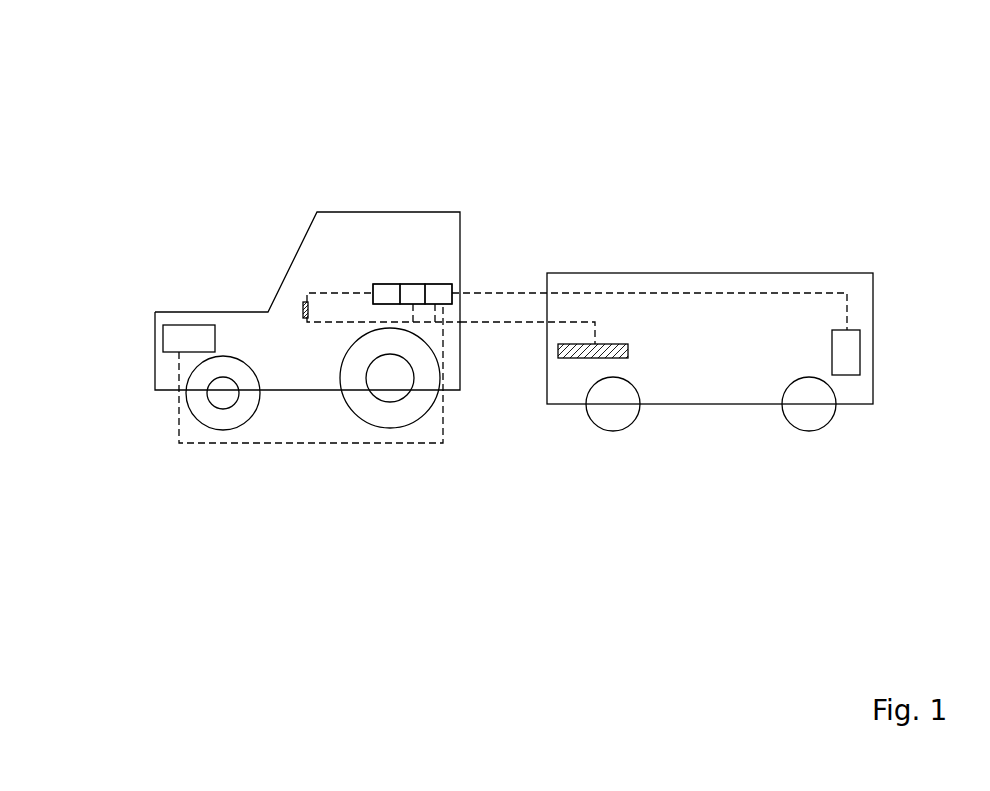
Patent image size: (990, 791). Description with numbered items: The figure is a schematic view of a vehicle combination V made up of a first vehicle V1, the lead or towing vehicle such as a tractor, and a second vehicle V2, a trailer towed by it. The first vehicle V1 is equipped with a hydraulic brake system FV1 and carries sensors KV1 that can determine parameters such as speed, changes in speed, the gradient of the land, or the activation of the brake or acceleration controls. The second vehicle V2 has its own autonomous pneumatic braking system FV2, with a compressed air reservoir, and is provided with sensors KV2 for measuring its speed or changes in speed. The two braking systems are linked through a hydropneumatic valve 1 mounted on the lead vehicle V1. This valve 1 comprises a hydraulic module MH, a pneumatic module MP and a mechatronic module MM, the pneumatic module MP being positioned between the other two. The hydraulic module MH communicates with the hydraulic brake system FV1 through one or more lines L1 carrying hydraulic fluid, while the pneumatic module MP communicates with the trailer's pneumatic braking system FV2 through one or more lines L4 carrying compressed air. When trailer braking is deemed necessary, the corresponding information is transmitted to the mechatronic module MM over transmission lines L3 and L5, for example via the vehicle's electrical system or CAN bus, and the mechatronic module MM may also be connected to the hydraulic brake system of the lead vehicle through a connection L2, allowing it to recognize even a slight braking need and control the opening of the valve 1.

The vehicle combination V is at (327, 618).
The first vehicle V1 is at (238, 173).
The second vehicle V2 is at (845, 203).
The hydraulic brake system FV1 is at (305, 307).
The autonomous pneumatic braking system FV2 is at (578, 358).
The sensors KV1 is at (190, 338).
The sensors KV2 is at (852, 357).
The hydropneumatic valve 1 is at (448, 272).
The hydraulic module MH is at (387, 283).
The pneumatic module MP is at (412, 283).
The mechatronic module MM is at (438, 283).
The lines L1 is at (340, 284).
The connection L2 is at (383, 332).
The transmission line L3 is at (311, 394).
The lines L4 is at (527, 345).
The transmission line L5 is at (649, 294).